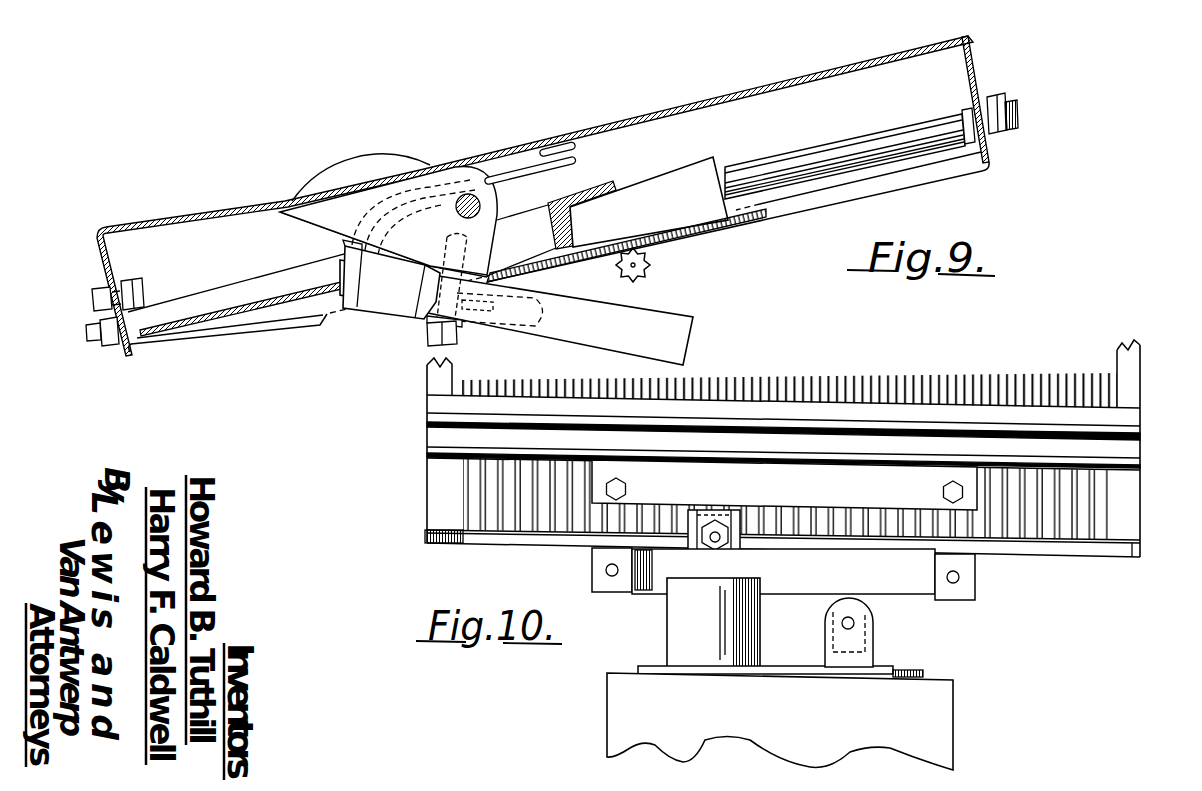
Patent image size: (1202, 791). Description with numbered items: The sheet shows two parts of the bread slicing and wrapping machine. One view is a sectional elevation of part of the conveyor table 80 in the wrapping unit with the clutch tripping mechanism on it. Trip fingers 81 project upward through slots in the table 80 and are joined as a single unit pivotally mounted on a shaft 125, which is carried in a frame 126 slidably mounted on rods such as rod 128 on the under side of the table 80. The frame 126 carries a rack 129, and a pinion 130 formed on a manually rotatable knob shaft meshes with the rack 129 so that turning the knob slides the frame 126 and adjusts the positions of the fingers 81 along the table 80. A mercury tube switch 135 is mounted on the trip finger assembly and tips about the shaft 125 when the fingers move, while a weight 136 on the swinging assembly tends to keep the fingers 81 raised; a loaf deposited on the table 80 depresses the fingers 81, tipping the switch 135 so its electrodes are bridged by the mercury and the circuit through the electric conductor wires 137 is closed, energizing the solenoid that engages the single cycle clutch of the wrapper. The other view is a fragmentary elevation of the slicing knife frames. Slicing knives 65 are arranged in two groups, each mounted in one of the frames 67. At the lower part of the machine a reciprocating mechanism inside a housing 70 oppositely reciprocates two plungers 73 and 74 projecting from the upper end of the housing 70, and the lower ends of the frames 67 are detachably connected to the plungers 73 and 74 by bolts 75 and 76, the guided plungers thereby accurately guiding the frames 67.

In FIG. 9, the conveyor table 80 is at (572, 130).
In FIG. 9, the trip fingers 81 is at (345, 178).
In FIG. 9, the shaft 125 is at (494, 192).
In FIG. 9, the frame 126 is at (634, 206).
In FIG. 9, the rod 128 is at (887, 140).
In FIG. 9, the rack 129 is at (673, 243).
In FIG. 9, the pinion 130 is at (650, 278).
In FIG. 9, the mercury tube switch 135 is at (380, 293).
In FIG. 9, the weight 136 is at (660, 336).
In FIG. 9, the electric conductor wires 137 is at (513, 158).
In FIG. 10, the slicing knives 65 is at (990, 372).
In FIG. 10, the knife frames 67 is at (1120, 372).
In FIG. 10, the housing 70 is at (930, 720).
In FIG. 10, the plunger 73 is at (685, 618).
In FIG. 10, the plunger 74 is at (860, 658).
In FIG. 10, the bolt 75 is at (715, 522).
In FIG. 10, the bolt 76 is at (854, 623).